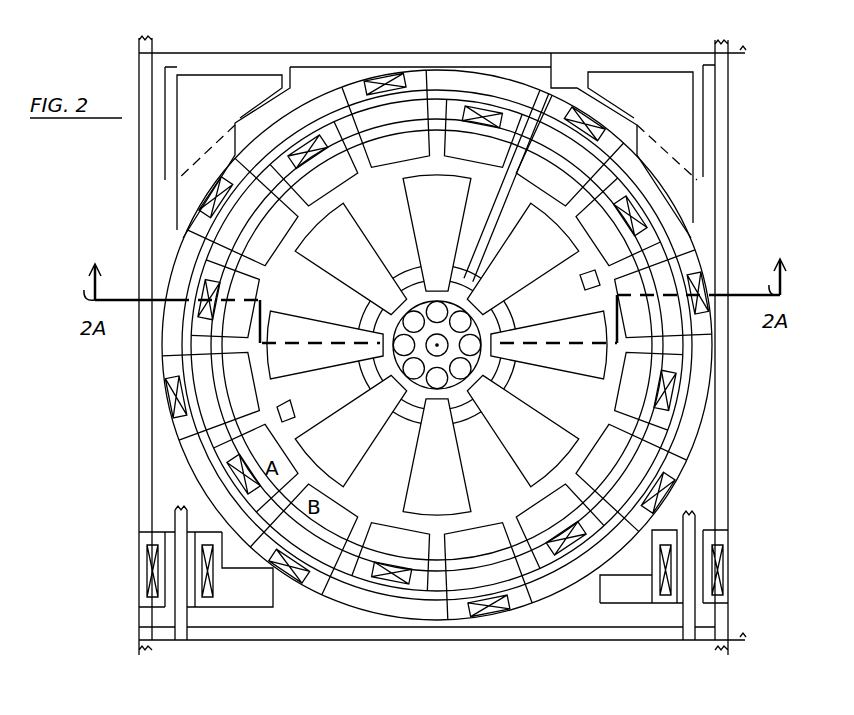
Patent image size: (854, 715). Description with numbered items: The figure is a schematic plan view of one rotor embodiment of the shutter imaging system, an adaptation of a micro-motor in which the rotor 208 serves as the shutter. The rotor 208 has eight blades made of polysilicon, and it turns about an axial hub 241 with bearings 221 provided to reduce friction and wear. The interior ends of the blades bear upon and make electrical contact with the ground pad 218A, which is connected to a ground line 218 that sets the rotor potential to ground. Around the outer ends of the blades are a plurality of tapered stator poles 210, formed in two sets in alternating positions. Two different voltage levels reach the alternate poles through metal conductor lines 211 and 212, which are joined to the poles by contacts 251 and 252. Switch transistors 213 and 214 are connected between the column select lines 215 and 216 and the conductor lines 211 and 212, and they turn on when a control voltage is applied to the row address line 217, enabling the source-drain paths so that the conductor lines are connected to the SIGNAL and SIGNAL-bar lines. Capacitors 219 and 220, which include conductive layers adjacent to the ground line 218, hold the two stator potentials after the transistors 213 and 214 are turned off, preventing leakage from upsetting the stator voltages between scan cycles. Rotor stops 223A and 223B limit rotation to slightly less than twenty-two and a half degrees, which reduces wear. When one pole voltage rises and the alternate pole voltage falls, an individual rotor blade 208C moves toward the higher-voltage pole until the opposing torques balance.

The rotor 208 is at (528, 432).
The individual rotor blade 208C is at (342, 458).
The stator poles 210 is at (385, 537).
The metal conductor line 211 is at (223, 258).
The metal conductor line 212 is at (183, 265).
The switch transistor 213 is at (182, 482).
The switch transistor 214 is at (705, 520).
The column select line 215 is at (145, 483).
The column select line 216 is at (718, 442).
The row address line 217 is at (290, 637).
The ground line 218 is at (345, 62).
The ground pad 218A is at (497, 195).
The capacitor 219 is at (218, 95).
The capacitor 220 is at (620, 80).
The bearings 221 is at (397, 333).
The rotor stop 223A is at (295, 407).
The rotor stop 223B is at (584, 283).
The axial hub 241 is at (427, 318).
The contact 251 is at (202, 315).
The contact 252 is at (173, 392).